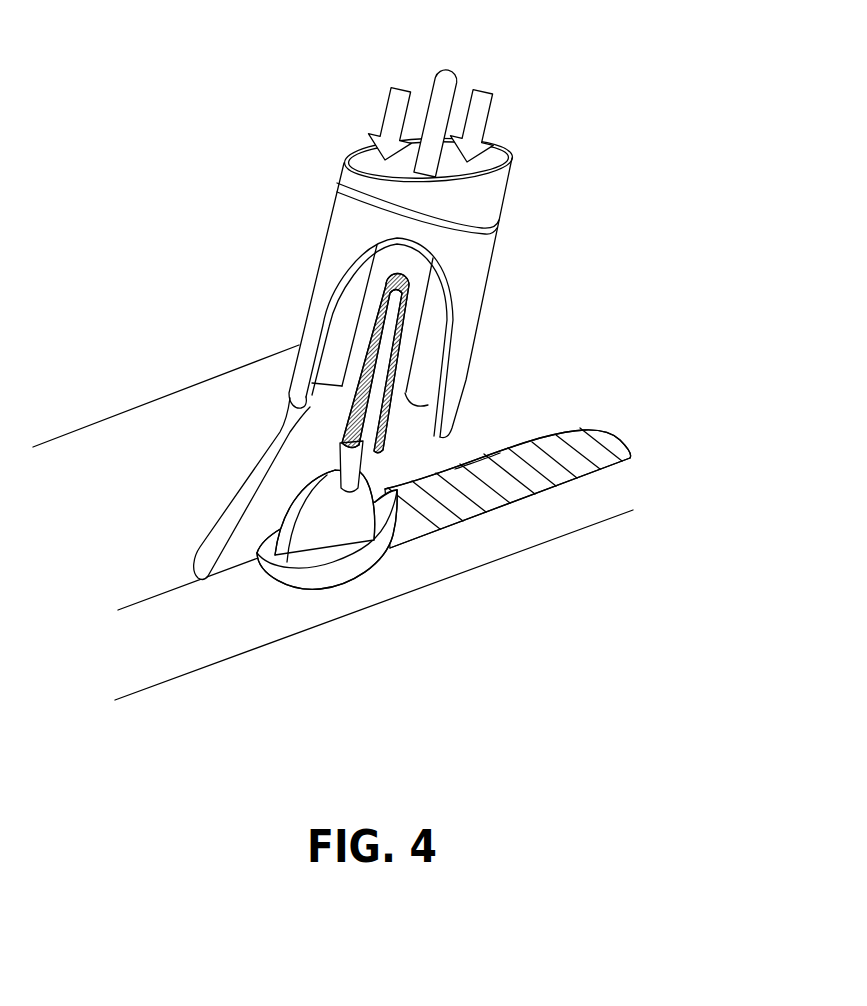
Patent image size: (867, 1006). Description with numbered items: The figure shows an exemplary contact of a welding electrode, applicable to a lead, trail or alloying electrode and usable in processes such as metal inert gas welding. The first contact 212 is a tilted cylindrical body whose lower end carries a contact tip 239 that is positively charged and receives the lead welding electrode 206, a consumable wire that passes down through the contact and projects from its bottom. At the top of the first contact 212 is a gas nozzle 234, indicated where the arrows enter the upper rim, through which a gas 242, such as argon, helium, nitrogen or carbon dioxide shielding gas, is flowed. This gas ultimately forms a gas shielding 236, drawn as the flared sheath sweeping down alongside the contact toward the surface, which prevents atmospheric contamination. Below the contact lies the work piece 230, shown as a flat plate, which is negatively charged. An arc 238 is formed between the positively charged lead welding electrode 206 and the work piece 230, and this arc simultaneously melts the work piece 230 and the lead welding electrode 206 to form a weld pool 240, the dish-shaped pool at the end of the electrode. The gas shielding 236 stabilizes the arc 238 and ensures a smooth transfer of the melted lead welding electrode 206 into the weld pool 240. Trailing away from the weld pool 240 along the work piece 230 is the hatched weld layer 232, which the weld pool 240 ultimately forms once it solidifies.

The lead welding electrode 206 is at (380, 278).
The first contact 212 is at (473, 252).
The work piece 230 is at (146, 508).
The weld layer 232 is at (473, 490).
The gas nozzle 234 is at (350, 178).
The gas shielding 236 is at (277, 473).
The arc 238 is at (313, 547).
The contact tip 239 is at (403, 352).
The weld pool 240 is at (340, 573).
The gas 242 is at (400, 97).